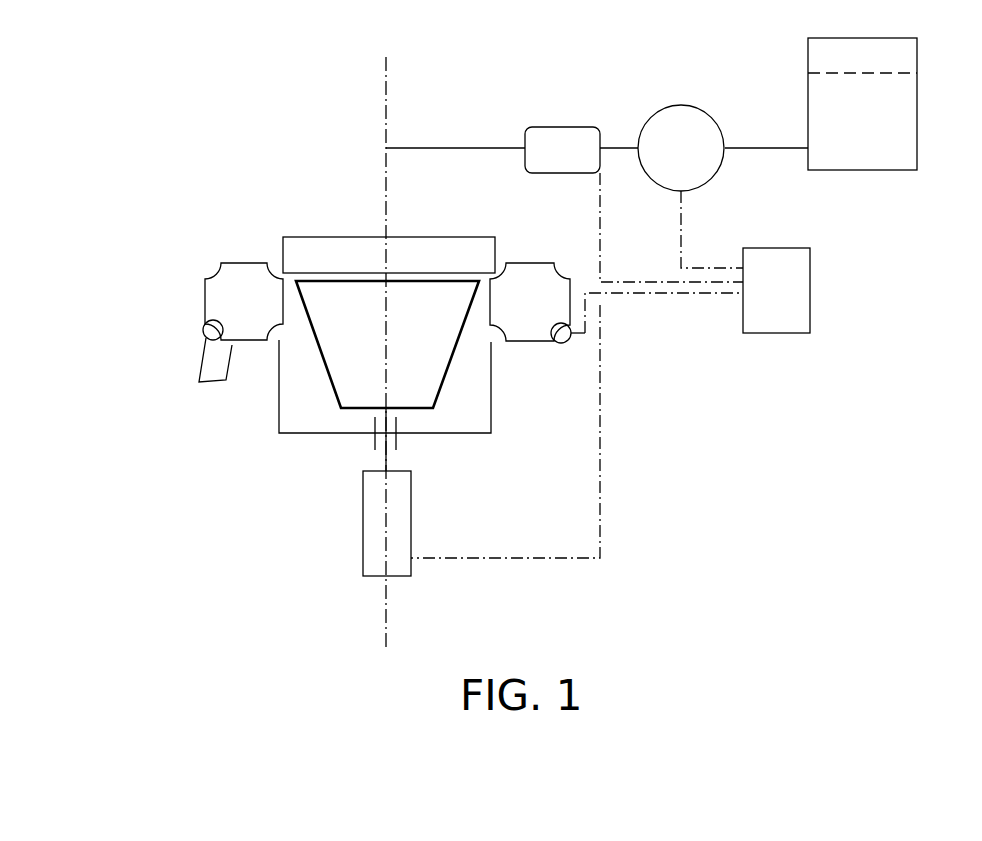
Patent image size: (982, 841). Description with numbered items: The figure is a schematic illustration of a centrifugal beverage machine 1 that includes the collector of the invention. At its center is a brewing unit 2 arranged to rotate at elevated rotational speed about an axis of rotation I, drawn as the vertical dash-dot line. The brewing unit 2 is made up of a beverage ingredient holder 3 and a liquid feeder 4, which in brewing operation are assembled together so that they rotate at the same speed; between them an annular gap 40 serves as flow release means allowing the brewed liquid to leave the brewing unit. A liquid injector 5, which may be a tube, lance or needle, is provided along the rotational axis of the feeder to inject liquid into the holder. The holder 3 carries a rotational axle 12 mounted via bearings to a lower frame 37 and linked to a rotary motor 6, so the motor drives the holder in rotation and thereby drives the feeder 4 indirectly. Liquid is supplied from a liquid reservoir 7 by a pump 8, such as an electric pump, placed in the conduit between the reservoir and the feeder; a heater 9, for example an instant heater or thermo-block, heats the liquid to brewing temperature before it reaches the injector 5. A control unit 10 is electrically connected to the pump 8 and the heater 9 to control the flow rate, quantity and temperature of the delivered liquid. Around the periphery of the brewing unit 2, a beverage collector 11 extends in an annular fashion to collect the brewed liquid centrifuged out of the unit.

The centrifugal beverage machine 1 is at (104, 129).
The axis of rotation I is at (384, 97).
The brewing unit 2 is at (375, 218).
The beverage ingredient holder 3 is at (347, 404).
The liquid feeder 4 is at (358, 237).
The annular gap 40 is at (324, 271).
The liquid injector 5 is at (386, 290).
The rotary motor 6 is at (362, 534).
The liquid reservoir 7 is at (909, 101).
The pump 8 is at (672, 102).
The heater 9 is at (543, 124).
The control unit 10 is at (812, 271).
The beverage collector 11 is at (196, 290).
The rotational axle 12 is at (387, 461).
The lower frame 37 is at (278, 410).